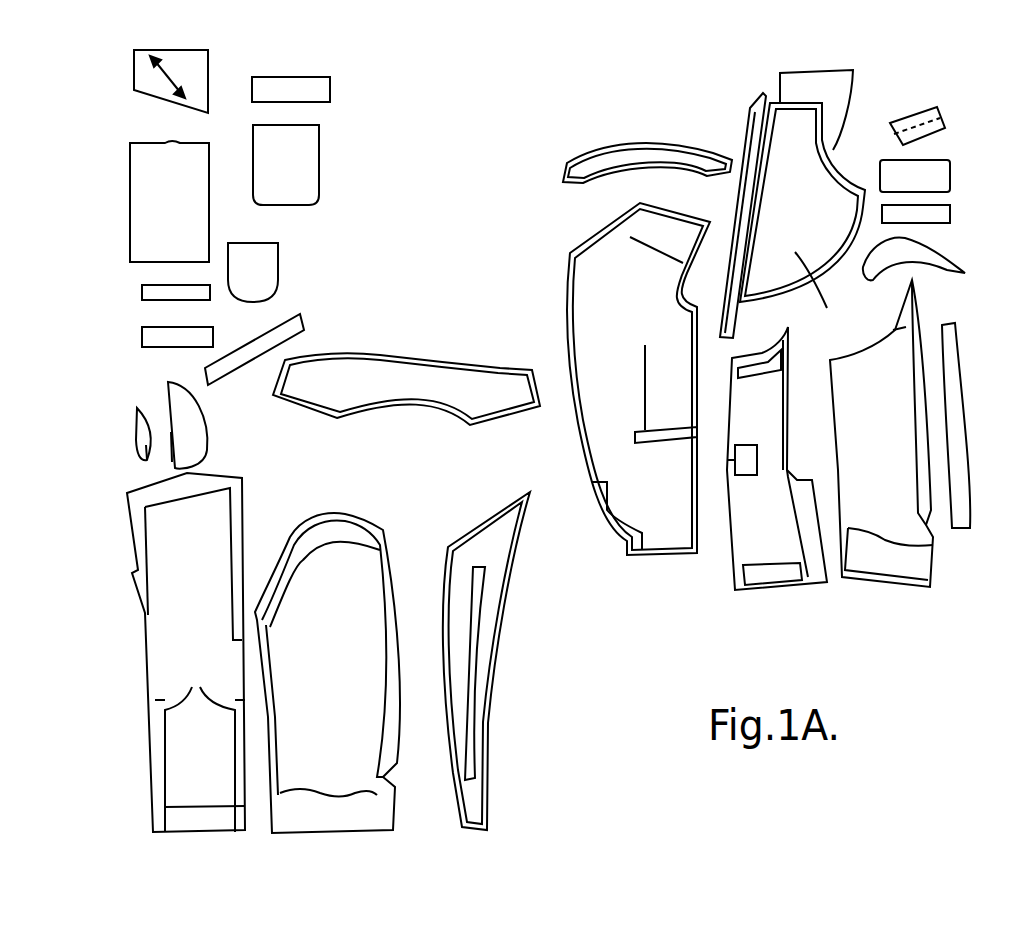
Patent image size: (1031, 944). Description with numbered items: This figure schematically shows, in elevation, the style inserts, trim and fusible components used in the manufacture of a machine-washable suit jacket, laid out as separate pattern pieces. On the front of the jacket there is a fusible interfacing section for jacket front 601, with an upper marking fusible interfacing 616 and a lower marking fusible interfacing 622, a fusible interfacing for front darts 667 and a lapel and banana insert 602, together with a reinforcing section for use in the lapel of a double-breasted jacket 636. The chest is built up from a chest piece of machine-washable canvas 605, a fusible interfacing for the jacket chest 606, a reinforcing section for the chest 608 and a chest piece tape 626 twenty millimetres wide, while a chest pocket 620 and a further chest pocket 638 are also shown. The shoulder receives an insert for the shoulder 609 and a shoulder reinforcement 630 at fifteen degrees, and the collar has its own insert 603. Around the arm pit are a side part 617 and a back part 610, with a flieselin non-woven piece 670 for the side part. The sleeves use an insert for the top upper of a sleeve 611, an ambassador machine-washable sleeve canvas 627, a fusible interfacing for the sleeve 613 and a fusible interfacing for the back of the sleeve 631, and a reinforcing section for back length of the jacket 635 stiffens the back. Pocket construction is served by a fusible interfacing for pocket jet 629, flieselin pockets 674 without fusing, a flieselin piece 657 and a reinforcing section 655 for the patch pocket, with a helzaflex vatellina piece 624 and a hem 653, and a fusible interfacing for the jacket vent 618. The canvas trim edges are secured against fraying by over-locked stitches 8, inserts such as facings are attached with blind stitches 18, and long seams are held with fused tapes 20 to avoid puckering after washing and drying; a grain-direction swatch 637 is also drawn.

The over-locked stitches 8 is at (157, 447).
The blind stitches 18 is at (472, 625).
The fused tapes 20 is at (232, 603).
The fusible interfacing section for jacket front 601 is at (649, 394).
The lapel and banana insert 602 is at (587, 473).
The insert for the collar 603 is at (406, 389).
The chest piece of machine-washable canvas 605 is at (842, 287).
The fusible interfacing for the jacket chest 606 is at (802, 202).
The reinforcing section for the chest of the jacket 608 is at (831, 121).
The insert for the shoulder 609 is at (186, 652).
The back part for the arm pit 610 is at (200, 688).
The insert for the top upper of a sleeve 611 is at (327, 673).
The fusible interfacing for sleeve of the jacket 613 is at (615, 478).
The upper marking fusible interfacing 616 is at (457, 379).
The side part for the arm pit 617 is at (777, 458).
The fusible interfacing for the jacket vent 618 is at (767, 511).
The chest pocket 620 is at (917, 114).
The lower marking fusible interfacing 622 is at (623, 516).
The helzaflex (vatellina) 624 is at (927, 257).
The chest piece tape 626 is at (735, 215).
The ambassador sleeve canvas 627 is at (137, 420).
The fusible interfacing for pocket jet 629 is at (937, 215).
The shoulder reinforcement 630 is at (656, 244).
The fusible interfacing for back of sleeve 631 is at (634, 482).
The reinforcing section for back length of jacket 635 is at (949, 413).
The reinforcing section for lapel of double-breasted jacket 636 is at (485, 660).
The fabric swatch with grain arrow 637 is at (171, 81).
The chest pocket 638 is at (253, 272).
The hem 653 is at (483, 674).
The reinforcing section for patch pocket reinforcement 655 is at (291, 89).
The flieselin for patch pocket 657 is at (286, 165).
The fusible interfacing for front darts 667 is at (177, 325).
The flieselin for side part 670 is at (169, 201).
The pockets of flieselin 674 is at (176, 280).